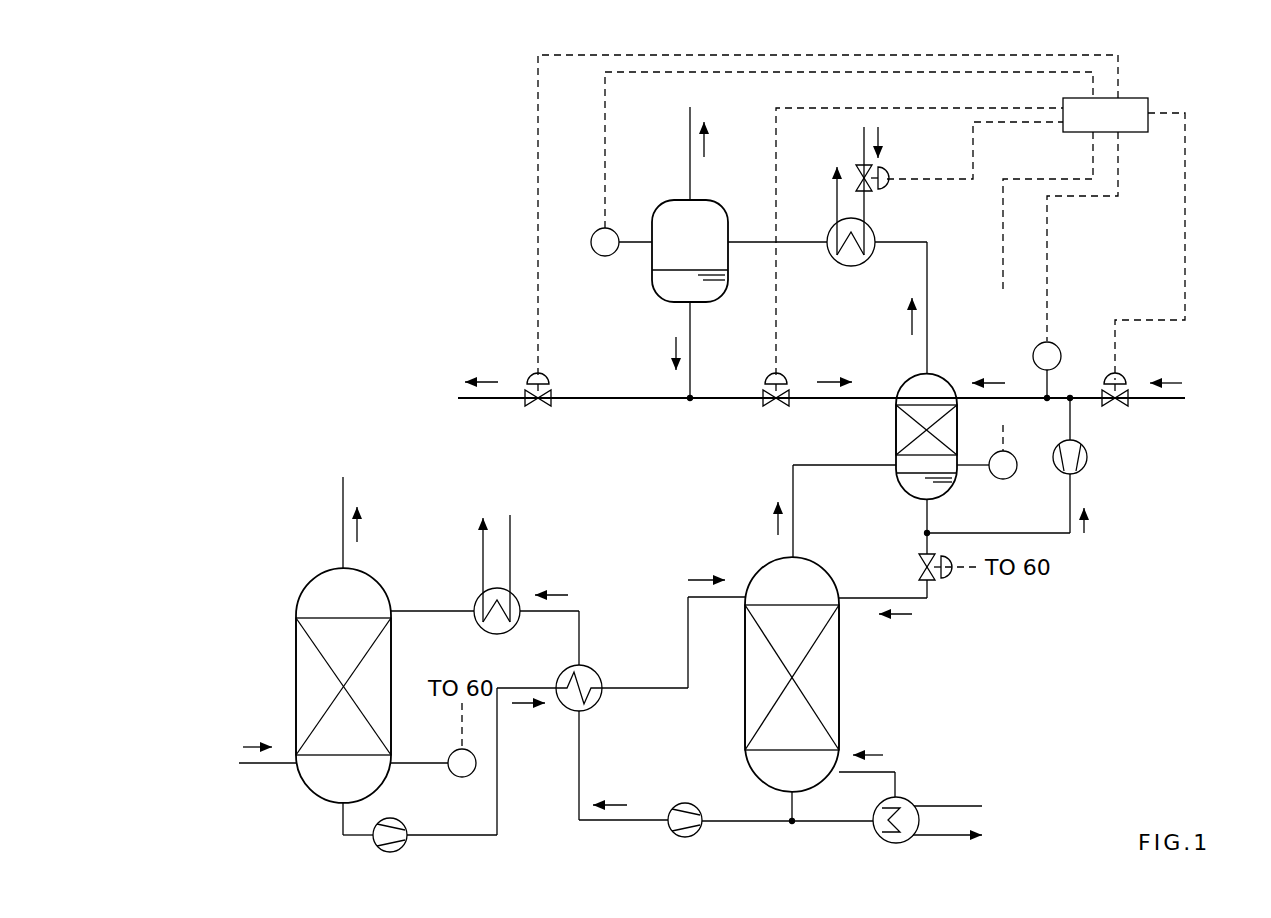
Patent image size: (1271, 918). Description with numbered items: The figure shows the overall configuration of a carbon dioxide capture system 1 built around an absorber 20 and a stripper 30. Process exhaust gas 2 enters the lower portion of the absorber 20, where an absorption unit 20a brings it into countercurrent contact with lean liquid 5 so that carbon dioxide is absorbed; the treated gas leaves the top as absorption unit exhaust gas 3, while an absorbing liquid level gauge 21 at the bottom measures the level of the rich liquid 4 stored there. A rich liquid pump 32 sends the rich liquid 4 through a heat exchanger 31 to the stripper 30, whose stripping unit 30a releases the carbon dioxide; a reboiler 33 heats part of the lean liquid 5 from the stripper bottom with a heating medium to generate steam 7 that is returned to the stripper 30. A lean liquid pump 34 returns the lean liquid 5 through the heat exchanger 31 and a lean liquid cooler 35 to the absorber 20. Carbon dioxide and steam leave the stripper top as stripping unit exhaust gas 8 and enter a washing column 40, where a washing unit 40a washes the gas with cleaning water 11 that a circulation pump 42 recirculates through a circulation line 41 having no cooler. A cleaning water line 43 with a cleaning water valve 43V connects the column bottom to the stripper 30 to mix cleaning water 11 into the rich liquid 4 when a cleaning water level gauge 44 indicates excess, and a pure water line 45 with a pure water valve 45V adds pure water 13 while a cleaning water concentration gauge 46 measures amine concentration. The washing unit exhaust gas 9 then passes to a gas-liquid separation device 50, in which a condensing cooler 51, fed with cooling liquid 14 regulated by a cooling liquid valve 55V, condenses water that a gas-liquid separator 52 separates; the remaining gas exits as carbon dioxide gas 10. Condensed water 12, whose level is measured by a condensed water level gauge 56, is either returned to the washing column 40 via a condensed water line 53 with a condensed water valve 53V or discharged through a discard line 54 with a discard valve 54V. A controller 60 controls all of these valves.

The carbon dioxide capture system 1 is at (385, 230).
The process exhaust gas 2 is at (250, 745).
The absorption unit exhaust gas 3 is at (360, 527).
The rich liquid 4 is at (697, 578).
The lean liquid 5 is at (558, 594).
The steam 7 is at (875, 755).
The stripping unit exhaust gas 8 is at (774, 522).
The washing unit exhaust gas 9 is at (910, 322).
The carbon dioxide gas 10 is at (708, 148).
The cleaning water 11 is at (993, 380).
The condensed water 12 is at (487, 380).
The pure water 13 is at (1176, 383).
The cooling liquid 14 is at (884, 130).
The absorber 20 is at (270, 610).
The absorption unit 20a is at (300, 655).
The absorbing liquid level gauge 21 is at (450, 752).
The stripper 30 is at (850, 656).
The stripping unit 30a is at (742, 690).
The heat exchanger 31 is at (597, 667).
The rich liquid pump 32 is at (405, 824).
The reboiler 33 is at (905, 797).
The lean liquid pump 34 is at (683, 803).
The lean liquid cooler 35 is at (505, 633).
The washing column 40 is at (882, 481).
The washing unit 40a is at (910, 428).
The circulation line 41 is at (1033, 531).
The circulation pump 42 is at (1090, 460).
The cleaning water line 43 is at (880, 595).
The cleaning water valve 43V is at (945, 578).
The cleaning water level gauge 44 is at (1012, 452).
The pure water line 45 is at (1088, 405).
The pure water valve 45V is at (1108, 380).
The cleaning water concentration gauge 46 is at (1040, 341).
The gas-liquid separation device 50 is at (660, 186).
The condensing cooler 51 is at (830, 226).
The gas-liquid separator 52 is at (716, 200).
The condensed water line 53 is at (727, 401).
The condensed water valve 53V is at (770, 378).
The discard line 54 is at (617, 401).
The discard valve 54V is at (548, 378).
The cooling liquid valve 55V is at (889, 175).
The condensed water level gauge 56 is at (593, 232).
The controller 60 is at (1138, 134).